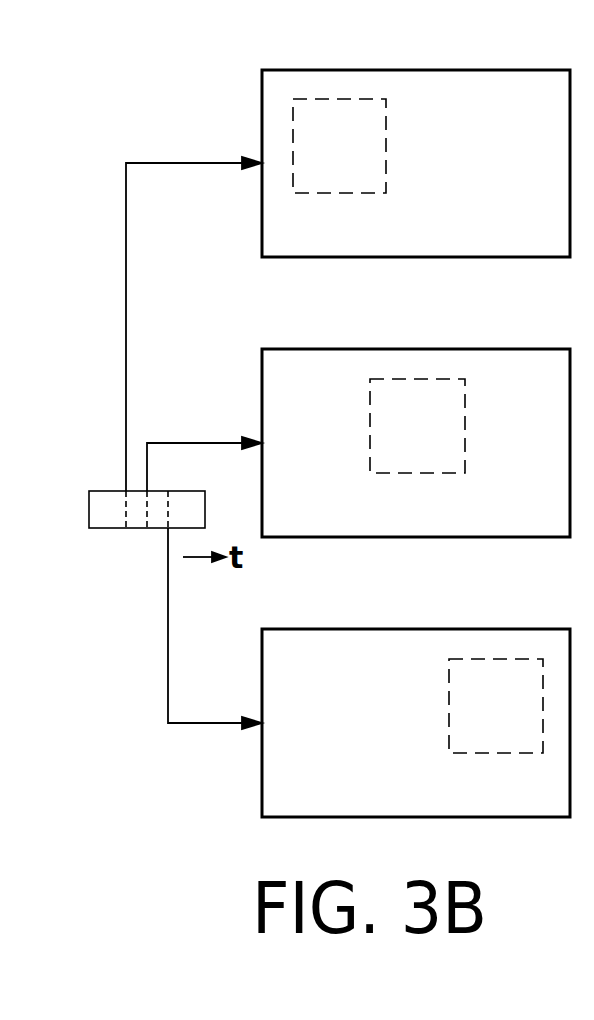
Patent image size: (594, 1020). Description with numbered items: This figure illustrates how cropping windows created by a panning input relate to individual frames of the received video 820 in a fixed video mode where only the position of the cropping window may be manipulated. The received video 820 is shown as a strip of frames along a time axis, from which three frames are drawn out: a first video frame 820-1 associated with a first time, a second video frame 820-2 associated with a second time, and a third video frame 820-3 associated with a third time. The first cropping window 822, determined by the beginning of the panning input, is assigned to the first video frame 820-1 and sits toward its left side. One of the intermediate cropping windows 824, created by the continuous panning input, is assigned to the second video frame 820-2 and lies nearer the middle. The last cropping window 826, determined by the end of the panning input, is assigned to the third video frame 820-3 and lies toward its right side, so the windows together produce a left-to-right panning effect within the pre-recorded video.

The received video 820 is at (108, 528).
The first video frame 820-1 is at (415, 70).
The second video frame 820-2 is at (415, 349).
The third video frame 820-3 is at (415, 629).
The first cropping window 822 is at (386, 133).
The intermediate cropping window 824 is at (465, 412).
The last cropping window 826 is at (449, 690).